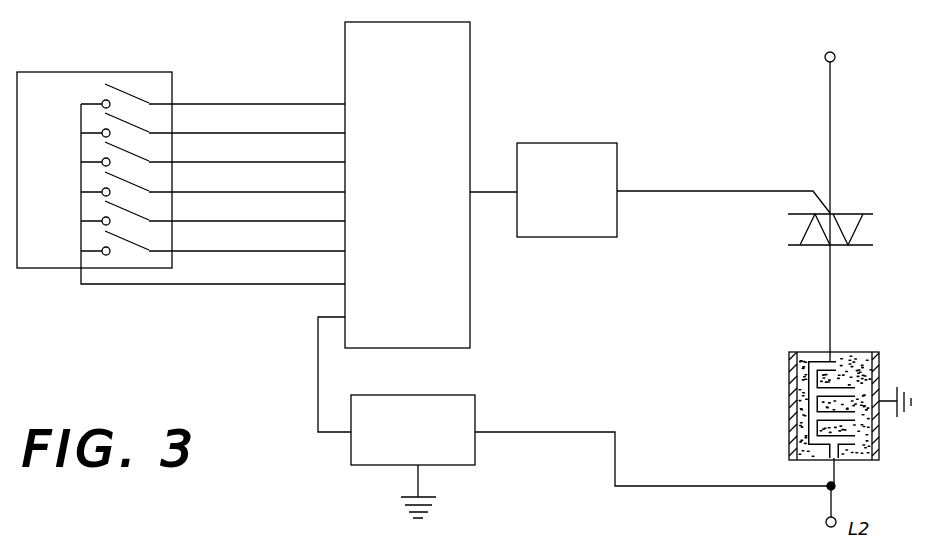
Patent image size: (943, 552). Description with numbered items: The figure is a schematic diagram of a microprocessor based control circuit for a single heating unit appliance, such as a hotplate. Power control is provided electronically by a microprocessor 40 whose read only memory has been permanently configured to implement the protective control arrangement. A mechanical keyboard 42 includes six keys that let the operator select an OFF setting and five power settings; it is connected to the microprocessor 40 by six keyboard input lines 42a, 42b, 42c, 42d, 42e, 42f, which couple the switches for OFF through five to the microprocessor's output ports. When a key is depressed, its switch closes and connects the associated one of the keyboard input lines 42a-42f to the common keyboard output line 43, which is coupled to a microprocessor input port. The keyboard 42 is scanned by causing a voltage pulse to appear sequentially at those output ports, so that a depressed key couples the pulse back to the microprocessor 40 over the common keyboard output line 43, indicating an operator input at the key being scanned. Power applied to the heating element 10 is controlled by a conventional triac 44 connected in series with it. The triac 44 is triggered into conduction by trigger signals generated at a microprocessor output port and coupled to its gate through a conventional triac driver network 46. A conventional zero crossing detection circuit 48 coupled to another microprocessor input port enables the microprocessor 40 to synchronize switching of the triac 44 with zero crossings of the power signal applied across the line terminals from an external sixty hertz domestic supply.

The heating element 10 is at (782, 388).
The microprocessor 40 is at (470, 88).
The keyboard 42 is at (118, 72).
The keyboard input line 42a is at (296, 104).
The keyboard input line 42b is at (280, 133).
The keyboard input line 42c is at (274, 164).
The keyboard input line 42d is at (280, 193).
The keyboard input line 42e is at (307, 222).
The keyboard input line 42f is at (302, 252).
The common keyboard output line 43 is at (231, 286).
The triac 44 is at (811, 247).
The triac driver network 46 is at (560, 143).
The zero crossing detection circuit 48 is at (475, 403).